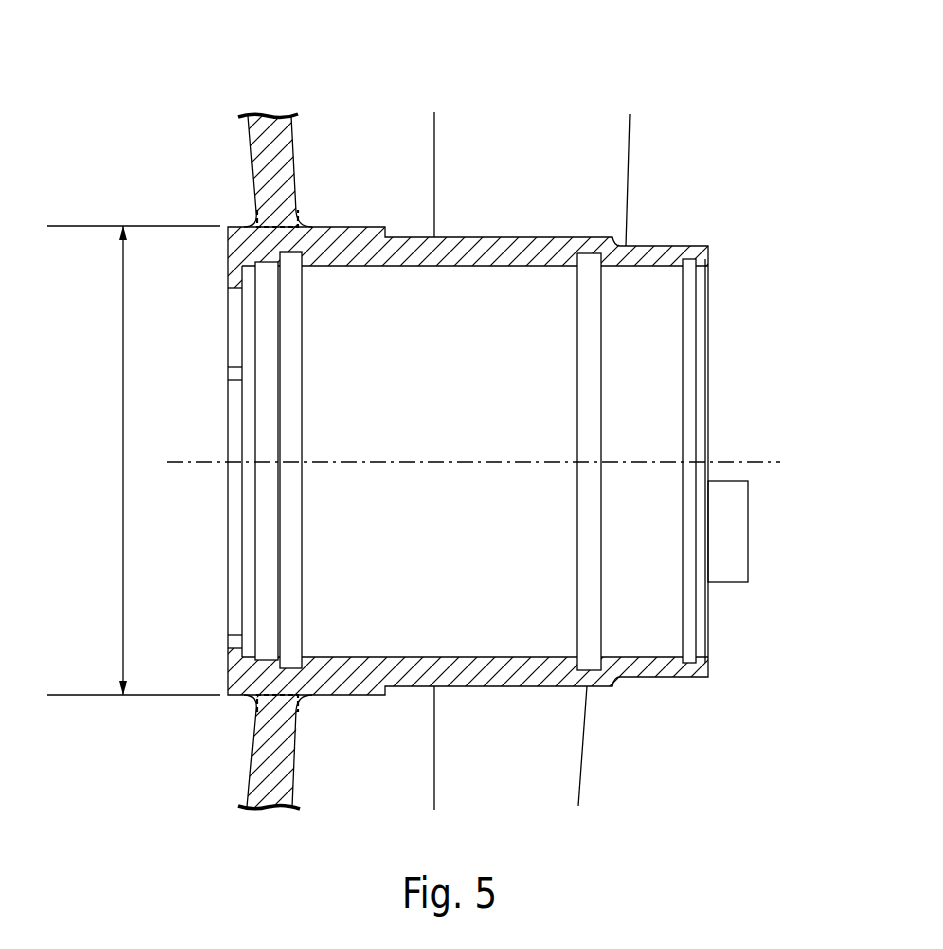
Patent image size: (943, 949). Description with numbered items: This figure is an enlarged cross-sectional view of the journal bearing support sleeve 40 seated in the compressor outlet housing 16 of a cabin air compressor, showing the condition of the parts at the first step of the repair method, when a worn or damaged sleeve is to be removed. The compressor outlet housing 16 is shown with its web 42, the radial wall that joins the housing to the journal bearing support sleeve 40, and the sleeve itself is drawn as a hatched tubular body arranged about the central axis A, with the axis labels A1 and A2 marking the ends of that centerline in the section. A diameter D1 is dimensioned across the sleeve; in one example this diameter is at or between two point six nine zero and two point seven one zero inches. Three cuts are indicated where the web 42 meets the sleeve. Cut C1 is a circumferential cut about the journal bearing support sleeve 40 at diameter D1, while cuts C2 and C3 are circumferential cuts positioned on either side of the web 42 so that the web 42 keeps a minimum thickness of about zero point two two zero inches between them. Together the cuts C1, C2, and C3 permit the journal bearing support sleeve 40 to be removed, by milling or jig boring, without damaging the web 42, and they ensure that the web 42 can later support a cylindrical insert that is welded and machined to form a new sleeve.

The compressor outlet housing 16 is at (711, 111).
The journal bearing support sleeve 40 is at (642, 252).
The web 42 is at (268, 132).
The cut C1 is at (257, 227).
The cut C2 is at (257, 222).
The cut C3 is at (302, 222).
The diameter D1 is at (123, 384).
The central axis A is at (780, 462).
The axis A1 is at (212, 462).
The axis A2 is at (740, 466).